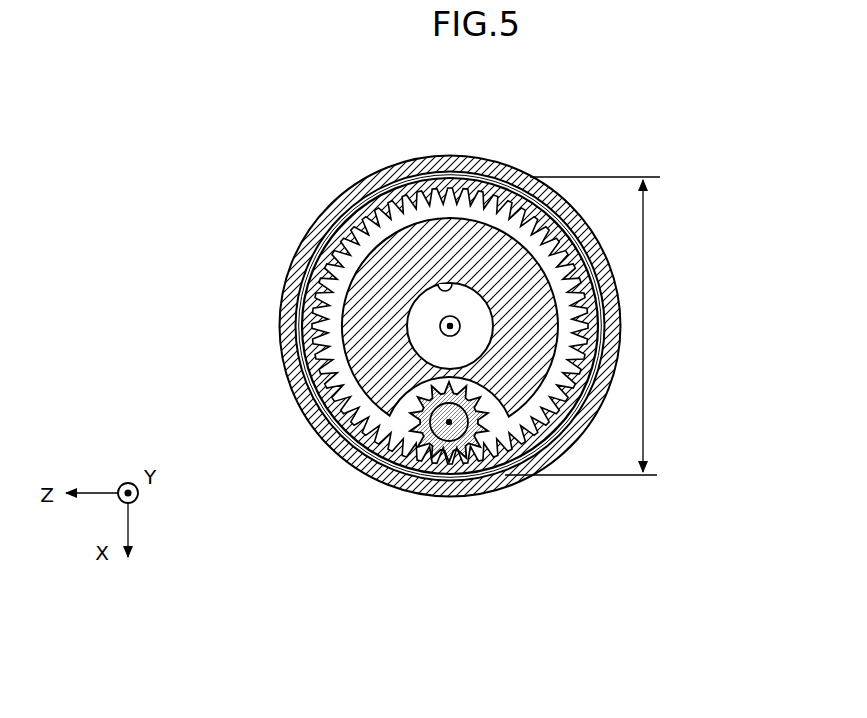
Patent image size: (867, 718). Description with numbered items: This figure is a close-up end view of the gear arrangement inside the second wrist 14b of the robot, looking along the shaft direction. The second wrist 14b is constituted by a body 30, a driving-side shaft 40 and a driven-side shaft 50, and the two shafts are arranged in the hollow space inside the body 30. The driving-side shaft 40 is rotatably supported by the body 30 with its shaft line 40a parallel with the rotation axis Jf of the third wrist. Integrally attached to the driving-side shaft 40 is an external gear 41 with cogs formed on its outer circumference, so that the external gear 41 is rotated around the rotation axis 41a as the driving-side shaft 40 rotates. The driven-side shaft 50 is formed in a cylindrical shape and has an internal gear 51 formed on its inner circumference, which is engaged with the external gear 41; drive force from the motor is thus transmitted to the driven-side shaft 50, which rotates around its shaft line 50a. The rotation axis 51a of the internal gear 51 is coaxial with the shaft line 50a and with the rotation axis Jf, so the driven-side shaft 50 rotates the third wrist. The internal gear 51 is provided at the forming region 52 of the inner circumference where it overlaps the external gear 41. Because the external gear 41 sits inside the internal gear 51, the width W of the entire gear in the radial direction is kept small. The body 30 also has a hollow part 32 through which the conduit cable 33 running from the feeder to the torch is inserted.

The second wrist 14b is at (474, 154).
The body 30 is at (332, 443).
The hollow part 32 is at (455, 282).
The conduit cable 33 is at (449, 326).
The rotation axis Jf is at (449, 327).
The shaft line 50a is at (319, 383).
The rotation axis 51a is at (319, 395).
The driven-side shaft 50 is at (394, 309).
The internal gear 51 is at (320, 238).
The forming region 52 is at (297, 255).
The driving-side shaft 40 is at (467, 449).
The external gear 41 is at (396, 452).
The shaft line 40a is at (447, 460).
The rotation axis 41a is at (429, 501).
The width of the entire gear W is at (652, 303).